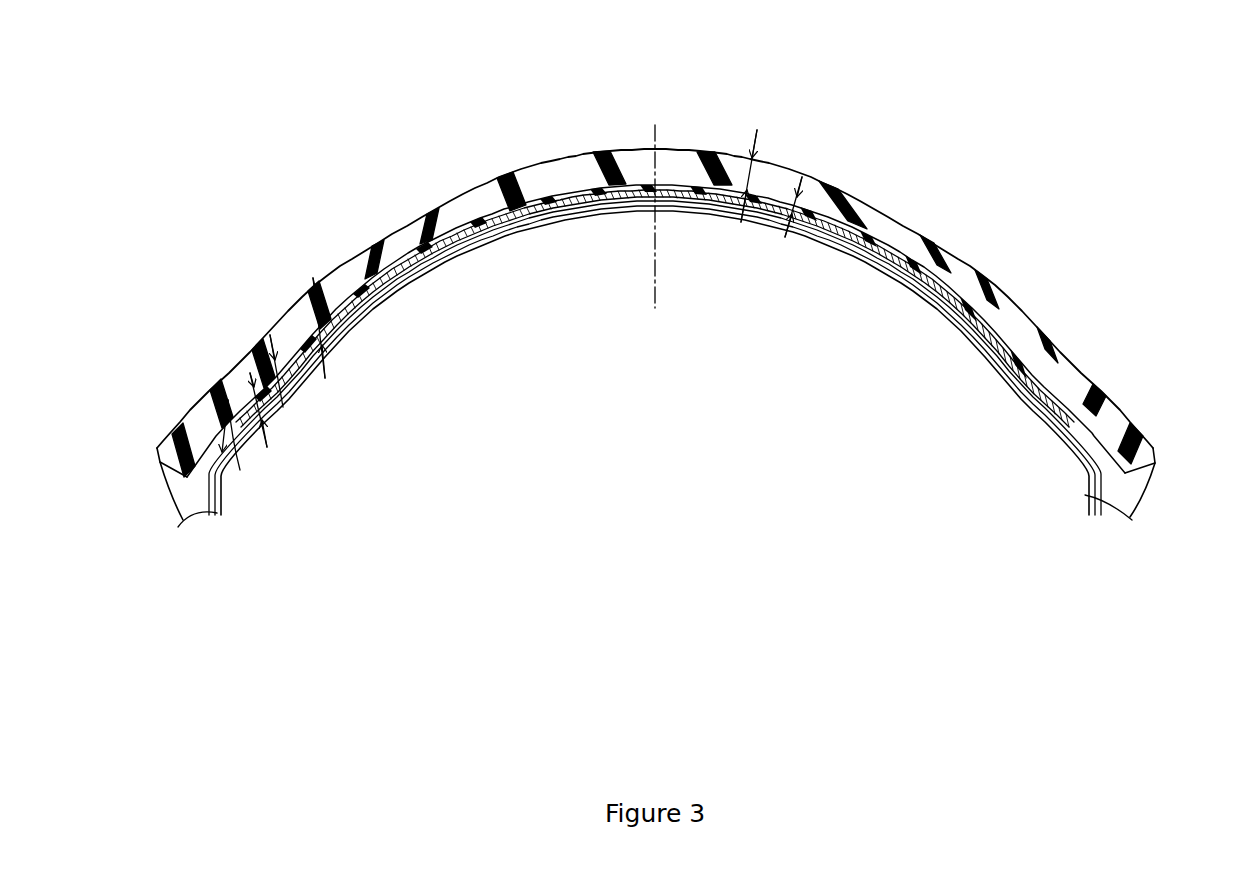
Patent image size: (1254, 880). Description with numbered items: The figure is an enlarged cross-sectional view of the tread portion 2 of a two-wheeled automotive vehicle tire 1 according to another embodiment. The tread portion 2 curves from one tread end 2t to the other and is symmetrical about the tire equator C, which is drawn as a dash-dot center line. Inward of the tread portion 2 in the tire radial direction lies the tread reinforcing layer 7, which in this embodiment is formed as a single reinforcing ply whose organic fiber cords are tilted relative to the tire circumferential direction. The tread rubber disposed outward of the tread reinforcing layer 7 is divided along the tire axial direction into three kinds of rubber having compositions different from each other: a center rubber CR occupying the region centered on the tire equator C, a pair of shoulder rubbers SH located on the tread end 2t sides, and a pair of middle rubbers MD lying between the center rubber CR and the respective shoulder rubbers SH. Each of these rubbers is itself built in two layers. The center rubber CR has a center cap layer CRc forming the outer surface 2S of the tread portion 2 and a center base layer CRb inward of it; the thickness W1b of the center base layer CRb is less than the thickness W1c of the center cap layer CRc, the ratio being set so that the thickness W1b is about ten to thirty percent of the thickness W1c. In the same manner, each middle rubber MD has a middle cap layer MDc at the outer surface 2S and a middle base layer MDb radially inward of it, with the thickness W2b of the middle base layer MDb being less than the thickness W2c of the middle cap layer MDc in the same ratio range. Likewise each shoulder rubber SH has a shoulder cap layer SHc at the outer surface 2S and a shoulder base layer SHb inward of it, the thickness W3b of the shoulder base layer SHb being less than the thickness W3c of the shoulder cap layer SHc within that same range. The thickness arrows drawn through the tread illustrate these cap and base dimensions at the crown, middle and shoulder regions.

The two-wheeled automotive vehicle tire 1 is at (907, 125).
The tread portion 2 is at (828, 176).
The outer surface 2S is at (728, 152).
The tread end 2t is at (157, 448).
The tread reinforcing layer 7 is at (1032, 348).
The center rubber CR is at (660, 80).
The center cap layer CRc is at (580, 182).
The center base layer CRb is at (635, 188).
The middle rubber MD is at (425, 172).
The middle cap layer MDc is at (303, 320).
The middle base layer MDb is at (397, 258).
The shoulder rubber SH is at (255, 294).
The shoulder cap layer SHc is at (190, 435).
The shoulder base layer SHb is at (250, 373).
The thickness of the center cap layer W1c is at (753, 178).
The thickness of the center base layer W1b is at (800, 207).
The thickness of the middle base layer W2b is at (325, 378).
The thickness of the middle cap layer W2c is at (318, 385).
The thickness of the shoulder base layer W3b is at (267, 447).
The thickness of the shoulder cap layer W3c is at (240, 470).
The tire equator C is at (655, 230).